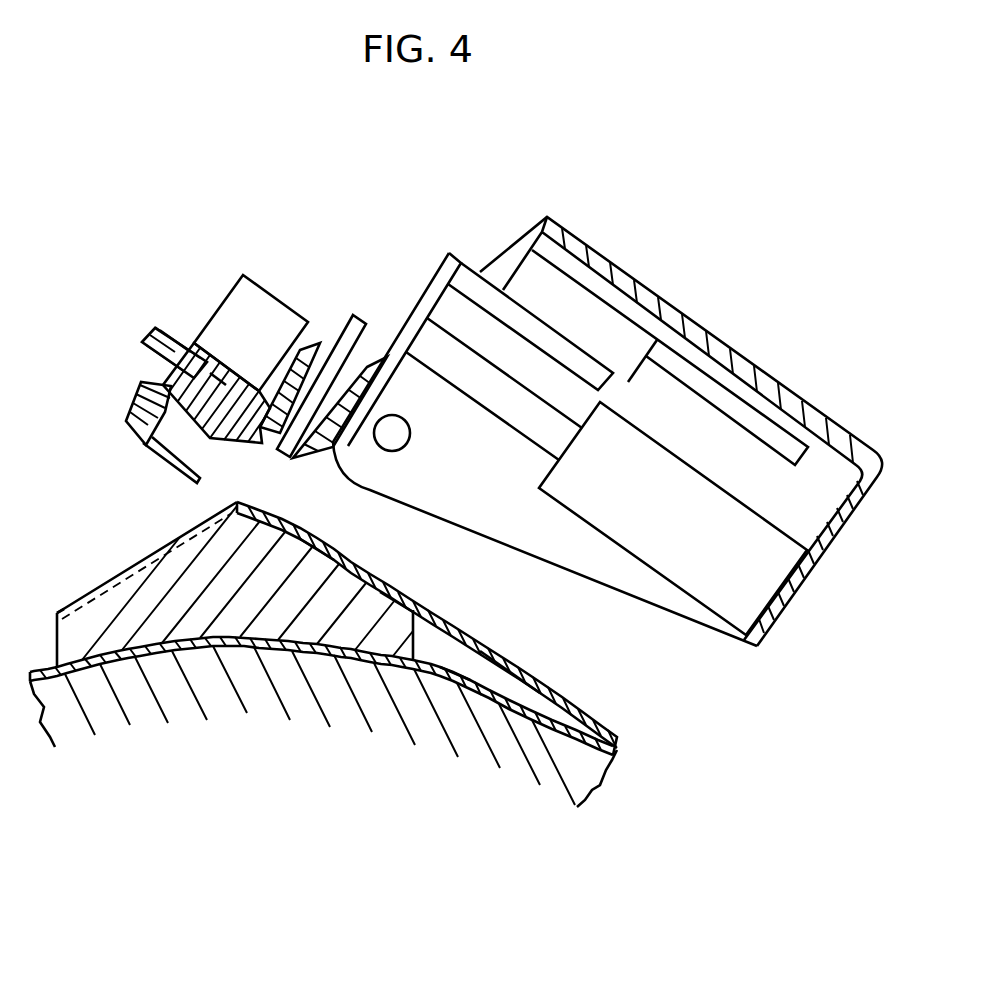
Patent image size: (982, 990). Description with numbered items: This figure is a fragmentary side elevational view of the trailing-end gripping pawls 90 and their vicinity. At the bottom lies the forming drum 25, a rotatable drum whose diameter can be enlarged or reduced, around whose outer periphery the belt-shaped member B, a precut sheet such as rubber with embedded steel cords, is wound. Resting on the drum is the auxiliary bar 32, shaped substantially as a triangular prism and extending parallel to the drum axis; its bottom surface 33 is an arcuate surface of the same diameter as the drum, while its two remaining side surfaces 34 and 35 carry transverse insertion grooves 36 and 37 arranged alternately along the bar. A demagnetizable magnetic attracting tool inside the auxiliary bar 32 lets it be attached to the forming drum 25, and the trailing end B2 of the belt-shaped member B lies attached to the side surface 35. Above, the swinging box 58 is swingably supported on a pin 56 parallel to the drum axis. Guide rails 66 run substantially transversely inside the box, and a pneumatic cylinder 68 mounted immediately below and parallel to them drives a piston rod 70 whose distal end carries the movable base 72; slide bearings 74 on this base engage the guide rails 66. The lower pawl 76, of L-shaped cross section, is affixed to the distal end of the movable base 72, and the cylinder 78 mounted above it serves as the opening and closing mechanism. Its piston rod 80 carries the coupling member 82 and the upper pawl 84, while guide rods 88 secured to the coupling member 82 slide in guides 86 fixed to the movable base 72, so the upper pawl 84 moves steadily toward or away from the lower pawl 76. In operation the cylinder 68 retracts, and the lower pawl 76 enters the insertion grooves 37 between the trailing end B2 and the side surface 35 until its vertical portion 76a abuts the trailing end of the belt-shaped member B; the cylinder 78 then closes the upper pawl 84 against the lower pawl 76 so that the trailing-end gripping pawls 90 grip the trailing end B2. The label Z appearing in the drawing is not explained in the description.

The forming drum 25 is at (573, 805).
The auxiliary bar 32 is at (117, 577).
The bottom surface 33 is at (260, 650).
The side surface 34 is at (92, 588).
The side surface 35 is at (263, 512).
The insertion grooves 36 is at (157, 550).
The insertion grooves 37 is at (380, 595).
The pin 56 is at (402, 443).
The swinging box 58 is at (700, 330).
The guide rails 66 is at (730, 392).
The pneumatic cylinder 68 is at (688, 578).
The piston rod 70 is at (536, 417).
The movable base 72 is at (442, 262).
The slide bearings 74 is at (528, 288).
The lower pawl 76 is at (168, 464).
The vertical portion 76a is at (135, 393).
The cylinder 78 is at (262, 297).
The piston rod 80 is at (210, 373).
The coupling member 82 is at (262, 445).
The upper pawl 84 is at (215, 440).
The guides 86 is at (315, 345).
The guide rods 88 is at (378, 305).
The trailing-end gripping pawls 90 is at (124, 355).
The belt-shaped member B is at (507, 665).
The trailing end B2 is at (337, 540).
The zone Z is at (443, 715).